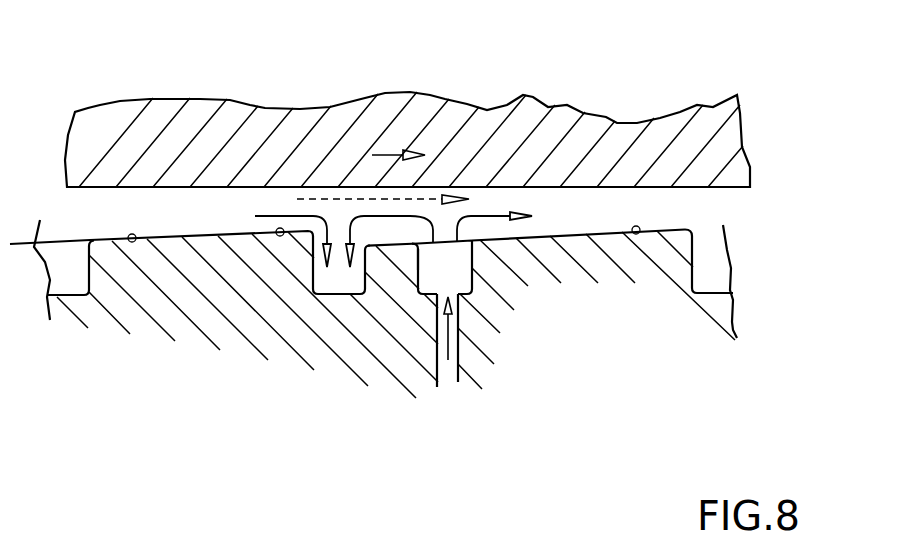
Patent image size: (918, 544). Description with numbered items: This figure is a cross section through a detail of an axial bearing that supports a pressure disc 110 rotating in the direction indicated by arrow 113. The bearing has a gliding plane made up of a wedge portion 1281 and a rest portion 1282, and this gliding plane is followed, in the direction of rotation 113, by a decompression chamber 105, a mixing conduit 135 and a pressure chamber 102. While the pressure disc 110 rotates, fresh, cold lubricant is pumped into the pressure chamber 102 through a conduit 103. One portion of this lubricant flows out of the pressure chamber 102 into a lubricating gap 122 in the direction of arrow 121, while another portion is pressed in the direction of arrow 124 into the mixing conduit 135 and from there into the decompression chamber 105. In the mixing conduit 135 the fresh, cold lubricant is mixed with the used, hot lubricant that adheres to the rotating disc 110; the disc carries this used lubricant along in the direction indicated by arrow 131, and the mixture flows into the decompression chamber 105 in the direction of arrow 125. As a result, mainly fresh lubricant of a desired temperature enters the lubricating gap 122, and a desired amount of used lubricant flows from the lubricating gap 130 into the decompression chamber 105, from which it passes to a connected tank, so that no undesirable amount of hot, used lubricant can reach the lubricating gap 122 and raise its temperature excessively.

The pressure disc 110 is at (578, 147).
The arrow indicating direction of rotation 113 is at (392, 147).
The arrow indicating flow of used lubricant 131 is at (427, 199).
The lubricating gap 130 is at (180, 212).
The wedge portion 1281 is at (132, 234).
The rest portion 1282 is at (280, 228).
The arrow indicating flow into decompression chamber 125 is at (315, 230).
The decompression chamber 105 is at (343, 283).
The arrow indicating flow into mixing conduit 124 is at (388, 218).
The mixing conduit 135 is at (411, 227).
The pressure chamber 102 is at (458, 272).
The conduit 103 is at (458, 382).
The arrow indicating flow into lubricating gap 121 is at (520, 240).
The lubricating gap 122 is at (671, 212).